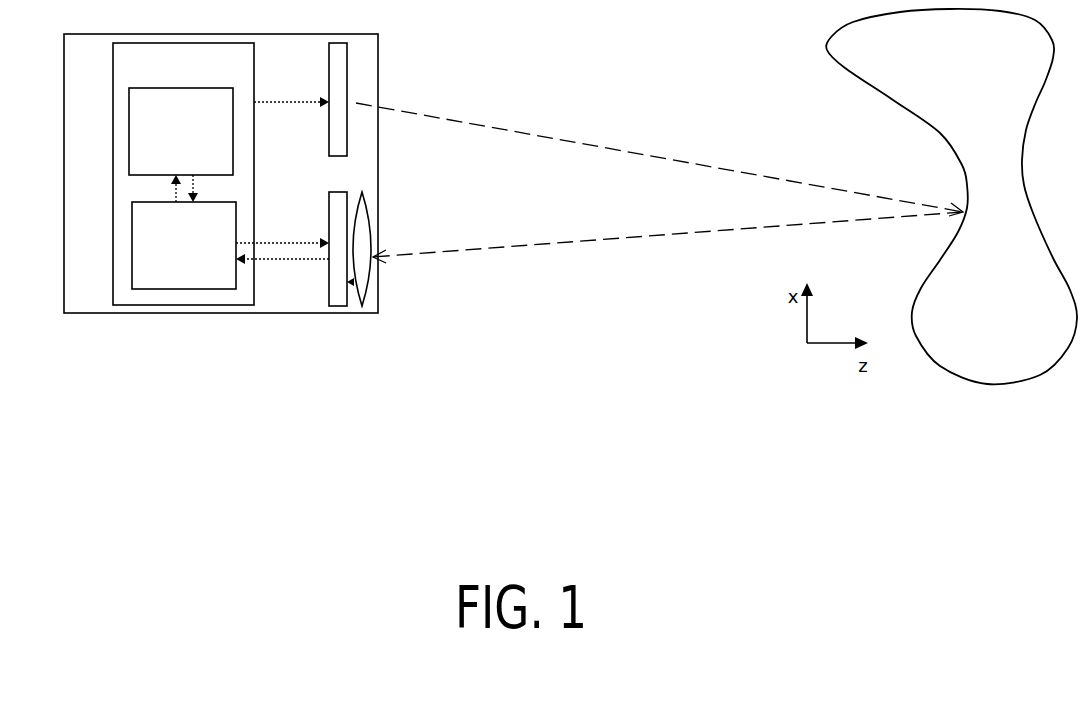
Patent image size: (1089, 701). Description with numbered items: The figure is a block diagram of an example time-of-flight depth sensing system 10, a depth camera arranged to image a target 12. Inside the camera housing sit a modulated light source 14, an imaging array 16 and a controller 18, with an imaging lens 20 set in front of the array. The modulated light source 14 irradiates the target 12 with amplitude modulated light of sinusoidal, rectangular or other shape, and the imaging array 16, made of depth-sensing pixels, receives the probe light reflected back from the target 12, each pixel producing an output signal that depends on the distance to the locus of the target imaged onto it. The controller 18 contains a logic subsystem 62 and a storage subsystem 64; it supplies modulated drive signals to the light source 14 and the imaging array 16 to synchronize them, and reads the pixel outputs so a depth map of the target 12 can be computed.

The time-of-flight depth sensing system 10 is at (74, 188).
The target 12 is at (959, 98).
The modulated light source 14 is at (347, 66).
The imaging array 16 is at (329, 203).
The controller 18 is at (173, 78).
The imaging lens 20 is at (373, 243).
The logic subsystem 62 is at (169, 143).
The storage subsystem 64 is at (170, 257).